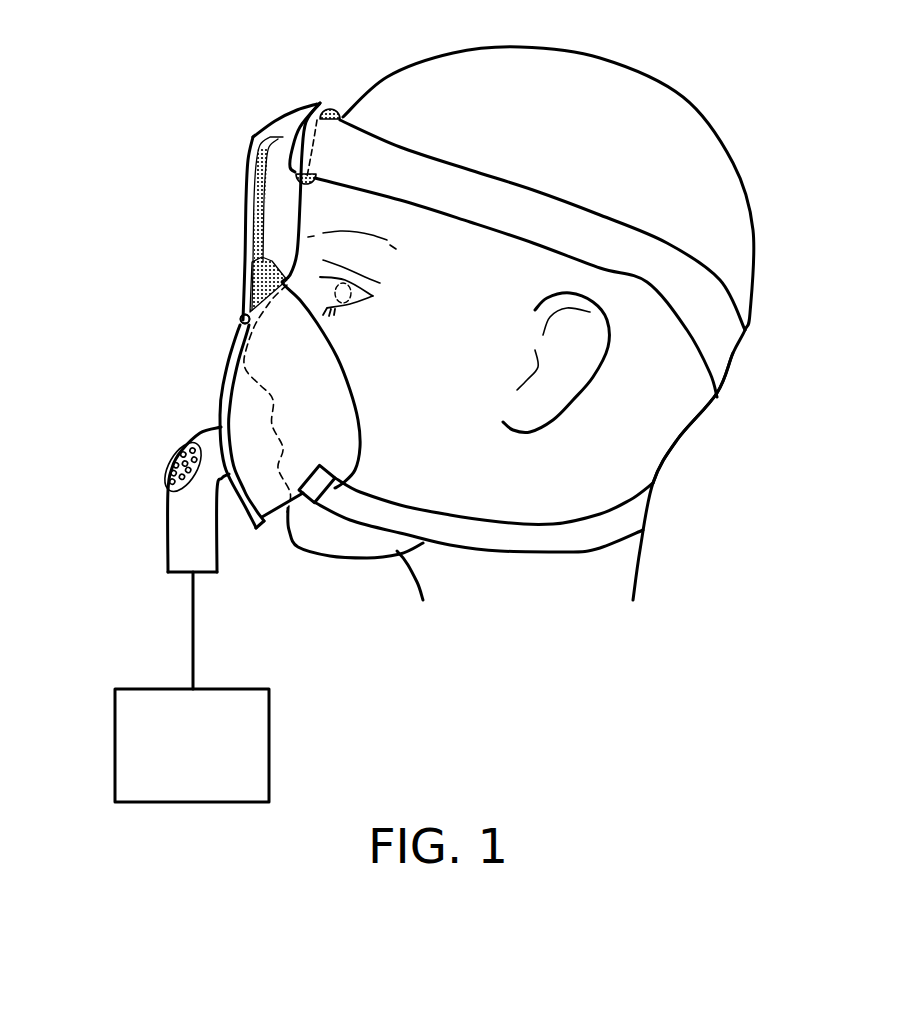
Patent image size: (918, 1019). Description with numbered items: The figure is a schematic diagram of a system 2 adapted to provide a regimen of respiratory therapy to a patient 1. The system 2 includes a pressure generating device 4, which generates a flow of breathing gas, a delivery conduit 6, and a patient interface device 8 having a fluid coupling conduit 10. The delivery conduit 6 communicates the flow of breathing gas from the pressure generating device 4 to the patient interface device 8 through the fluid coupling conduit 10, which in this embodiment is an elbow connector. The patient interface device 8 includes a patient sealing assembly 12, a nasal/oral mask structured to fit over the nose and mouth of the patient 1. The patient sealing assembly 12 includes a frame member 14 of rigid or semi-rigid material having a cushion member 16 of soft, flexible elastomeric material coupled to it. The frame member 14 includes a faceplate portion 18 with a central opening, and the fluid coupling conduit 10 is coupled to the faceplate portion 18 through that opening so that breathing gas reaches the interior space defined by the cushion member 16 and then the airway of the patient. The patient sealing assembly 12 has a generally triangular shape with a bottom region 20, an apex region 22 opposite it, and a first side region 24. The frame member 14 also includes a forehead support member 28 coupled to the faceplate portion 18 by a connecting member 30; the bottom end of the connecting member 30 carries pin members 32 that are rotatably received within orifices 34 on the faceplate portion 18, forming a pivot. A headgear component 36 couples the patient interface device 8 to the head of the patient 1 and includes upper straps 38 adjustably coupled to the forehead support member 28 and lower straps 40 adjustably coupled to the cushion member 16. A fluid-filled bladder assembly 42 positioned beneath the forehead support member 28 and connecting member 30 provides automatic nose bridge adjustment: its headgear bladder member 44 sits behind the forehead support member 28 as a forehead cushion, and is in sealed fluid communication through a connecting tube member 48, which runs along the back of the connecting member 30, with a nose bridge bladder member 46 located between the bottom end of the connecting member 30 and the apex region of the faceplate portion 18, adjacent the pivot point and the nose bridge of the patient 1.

The patient 1 is at (713, 173).
The system 2 is at (130, 262).
The pressure generating device 4 is at (270, 745).
The delivery conduit 6 is at (190, 642).
The patient interface device 8 is at (184, 422).
The fluid coupling conduit 10 is at (177, 537).
The patient sealing assembly 12 is at (298, 516).
The frame member 14 is at (240, 332).
The cushion member 16 is at (353, 390).
The faceplate portion 18 is at (225, 388).
The bottom region 20 is at (237, 527).
The apex region 22 is at (248, 283).
The first side region 24 is at (332, 427).
The forehead support member 28 is at (292, 122).
The connecting member 30 is at (245, 188).
The pin members 32 is at (240, 318).
The orifices 34 is at (245, 319).
The headgear component 36 is at (643, 507).
The upper straps 38 is at (543, 212).
The lower straps 40 is at (513, 537).
The bladder assembly 42 is at (333, 108).
The headgear bladder member 44 is at (315, 145).
The nose bridge bladder member 46 is at (253, 258).
The connecting tube member 48 is at (252, 212).